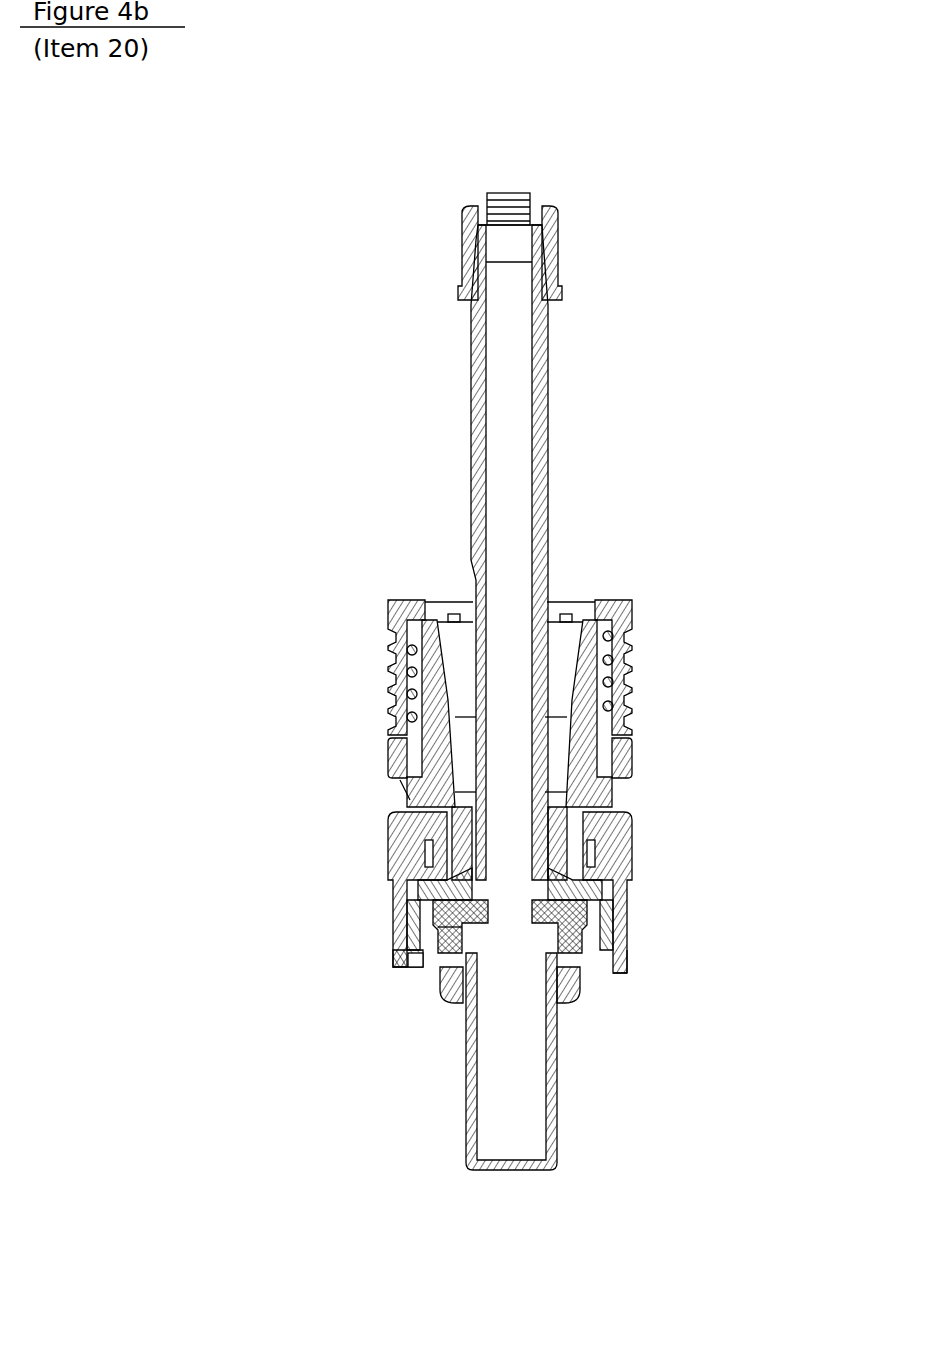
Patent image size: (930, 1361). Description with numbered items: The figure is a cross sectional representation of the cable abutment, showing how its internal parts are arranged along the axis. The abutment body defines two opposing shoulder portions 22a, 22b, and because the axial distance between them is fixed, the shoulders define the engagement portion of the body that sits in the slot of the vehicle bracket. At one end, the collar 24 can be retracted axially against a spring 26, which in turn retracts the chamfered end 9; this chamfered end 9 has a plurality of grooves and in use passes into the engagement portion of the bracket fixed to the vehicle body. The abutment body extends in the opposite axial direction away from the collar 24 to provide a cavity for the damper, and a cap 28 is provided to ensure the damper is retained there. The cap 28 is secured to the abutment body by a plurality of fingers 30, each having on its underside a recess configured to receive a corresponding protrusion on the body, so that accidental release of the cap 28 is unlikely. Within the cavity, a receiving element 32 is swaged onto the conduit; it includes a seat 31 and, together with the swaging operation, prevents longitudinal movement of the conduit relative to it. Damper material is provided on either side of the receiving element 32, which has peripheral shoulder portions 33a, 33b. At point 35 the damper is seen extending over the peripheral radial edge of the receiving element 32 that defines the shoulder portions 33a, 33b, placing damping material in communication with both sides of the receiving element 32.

The chamfered end 9 is at (408, 796).
The collar 24 is at (636, 612).
The spring 26 is at (627, 667).
The shoulder portion 22a is at (634, 773).
The shoulder portion 22b is at (634, 832).
The shoulder portion 33b is at (412, 874).
The shoulder portion 33a is at (323, 978).
The fingers 30 is at (616, 921).
The cap 28 is at (632, 961).
The receiving element 32 is at (617, 971).
The point 35 is at (438, 940).
The seat 31 is at (540, 942).